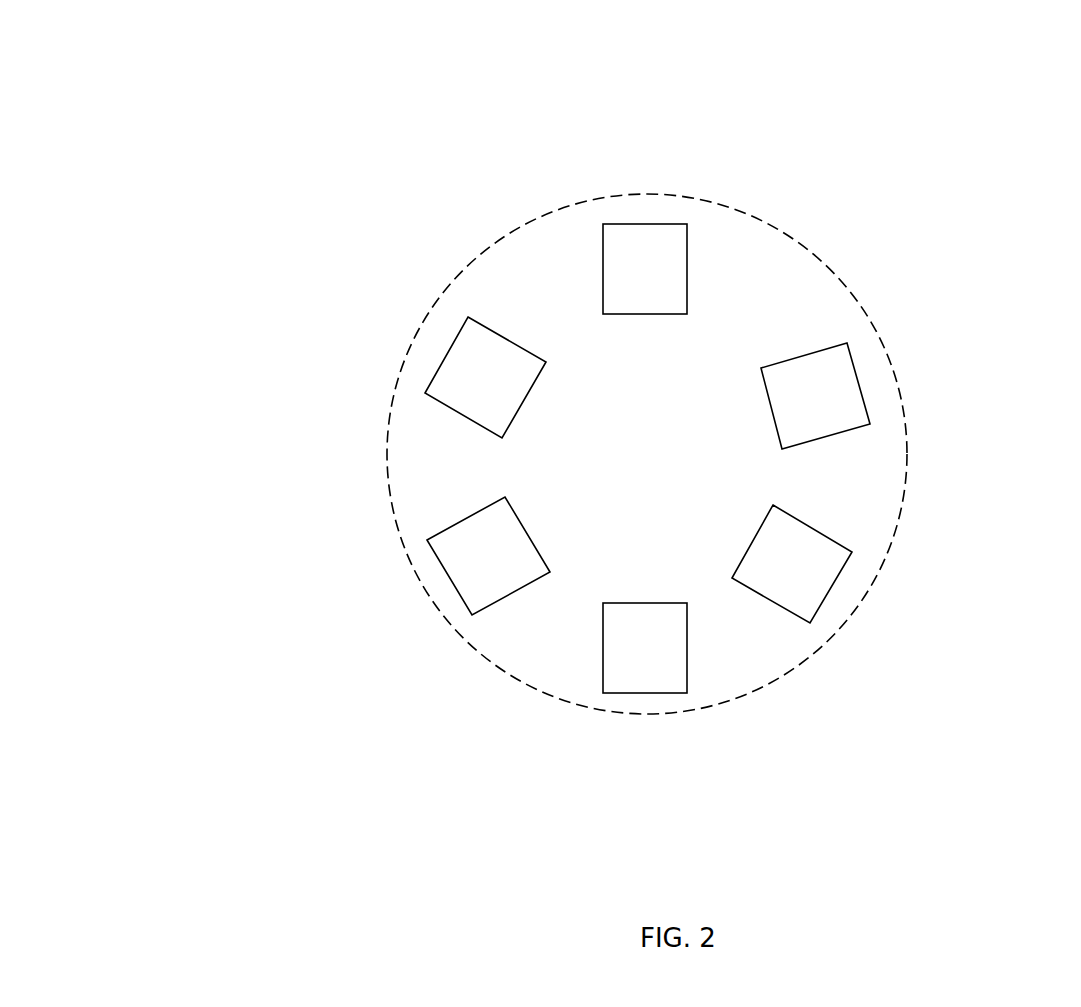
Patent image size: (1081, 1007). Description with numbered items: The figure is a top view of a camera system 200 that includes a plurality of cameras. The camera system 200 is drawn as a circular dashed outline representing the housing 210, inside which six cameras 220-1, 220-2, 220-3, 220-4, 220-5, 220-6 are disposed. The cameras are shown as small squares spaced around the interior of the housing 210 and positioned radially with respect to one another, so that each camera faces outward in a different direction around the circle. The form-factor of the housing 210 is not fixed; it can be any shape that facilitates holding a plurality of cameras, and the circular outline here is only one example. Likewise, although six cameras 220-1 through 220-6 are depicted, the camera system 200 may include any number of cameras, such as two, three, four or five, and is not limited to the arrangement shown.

The camera system 200 is at (223, 84).
The housing 210 is at (497, 242).
The camera 220-1 is at (667, 224).
The camera 220-2 is at (821, 347).
The camera 220-3 is at (833, 540).
The camera 220-4 is at (687, 643).
The camera 220-5 is at (505, 598).
The camera 220-6 is at (457, 403).